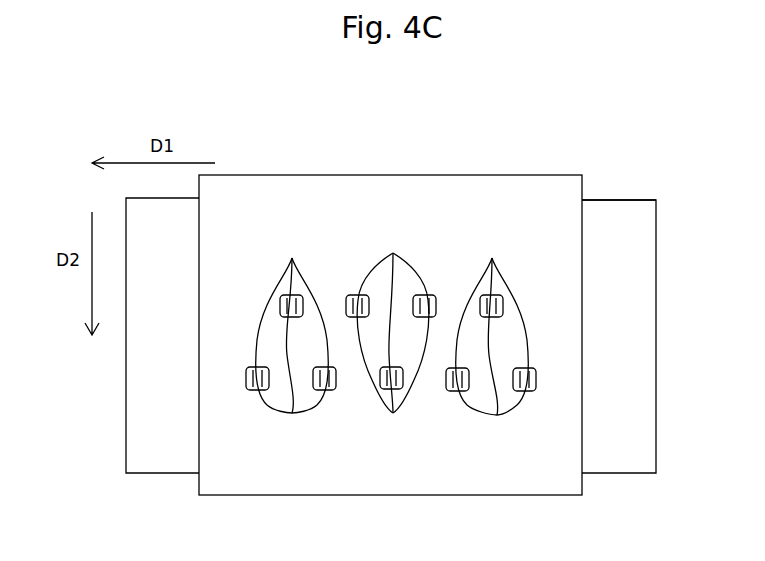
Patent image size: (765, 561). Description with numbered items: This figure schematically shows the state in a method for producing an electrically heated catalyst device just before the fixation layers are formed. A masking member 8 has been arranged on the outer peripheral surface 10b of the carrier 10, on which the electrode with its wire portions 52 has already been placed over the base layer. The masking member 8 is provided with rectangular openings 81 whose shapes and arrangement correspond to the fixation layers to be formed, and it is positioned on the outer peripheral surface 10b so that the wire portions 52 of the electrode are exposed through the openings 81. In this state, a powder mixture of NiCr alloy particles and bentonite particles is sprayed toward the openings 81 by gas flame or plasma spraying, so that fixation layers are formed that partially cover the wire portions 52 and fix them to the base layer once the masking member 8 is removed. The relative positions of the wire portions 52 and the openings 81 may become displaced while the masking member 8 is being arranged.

The masking member 8 is at (567, 400).
The carrier 10 is at (620, 297).
The outer peripheral surface 10b is at (642, 210).
The wire portions 52 is at (492, 260).
The openings 81 is at (392, 348).